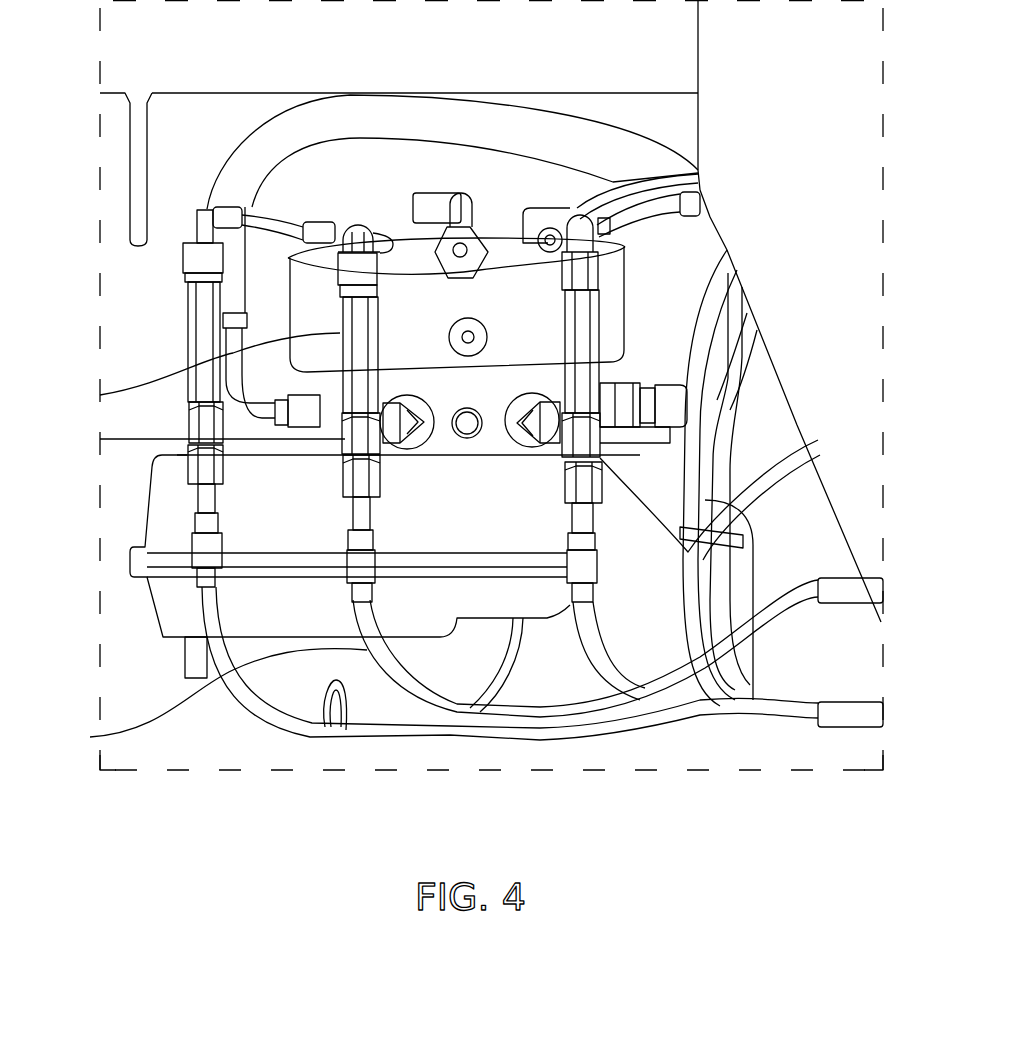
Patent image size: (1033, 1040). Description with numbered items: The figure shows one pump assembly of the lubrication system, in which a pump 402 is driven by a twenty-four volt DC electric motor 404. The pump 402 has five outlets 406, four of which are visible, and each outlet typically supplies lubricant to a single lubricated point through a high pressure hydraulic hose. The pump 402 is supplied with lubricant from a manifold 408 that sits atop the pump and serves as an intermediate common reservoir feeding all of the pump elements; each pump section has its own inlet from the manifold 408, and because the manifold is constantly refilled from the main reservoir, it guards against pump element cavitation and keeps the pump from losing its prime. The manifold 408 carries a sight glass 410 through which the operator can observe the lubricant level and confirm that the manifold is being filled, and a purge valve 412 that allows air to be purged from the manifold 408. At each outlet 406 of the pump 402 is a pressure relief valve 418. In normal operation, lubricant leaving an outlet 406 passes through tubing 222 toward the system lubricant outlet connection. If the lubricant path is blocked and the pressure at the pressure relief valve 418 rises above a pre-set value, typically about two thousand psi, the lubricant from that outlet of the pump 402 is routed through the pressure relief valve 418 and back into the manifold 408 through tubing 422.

The tubing 222 is at (247, 698).
The pump 402 is at (680, 590).
The electric motor 404 is at (417, 637).
The outlets 406 is at (222, 440).
The manifold 408 is at (407, 240).
The sight glass 410 is at (468, 318).
The purge valve 412 is at (461, 193).
The pressure relief valve 418 is at (188, 336).
The tubing 422 is at (207, 209).